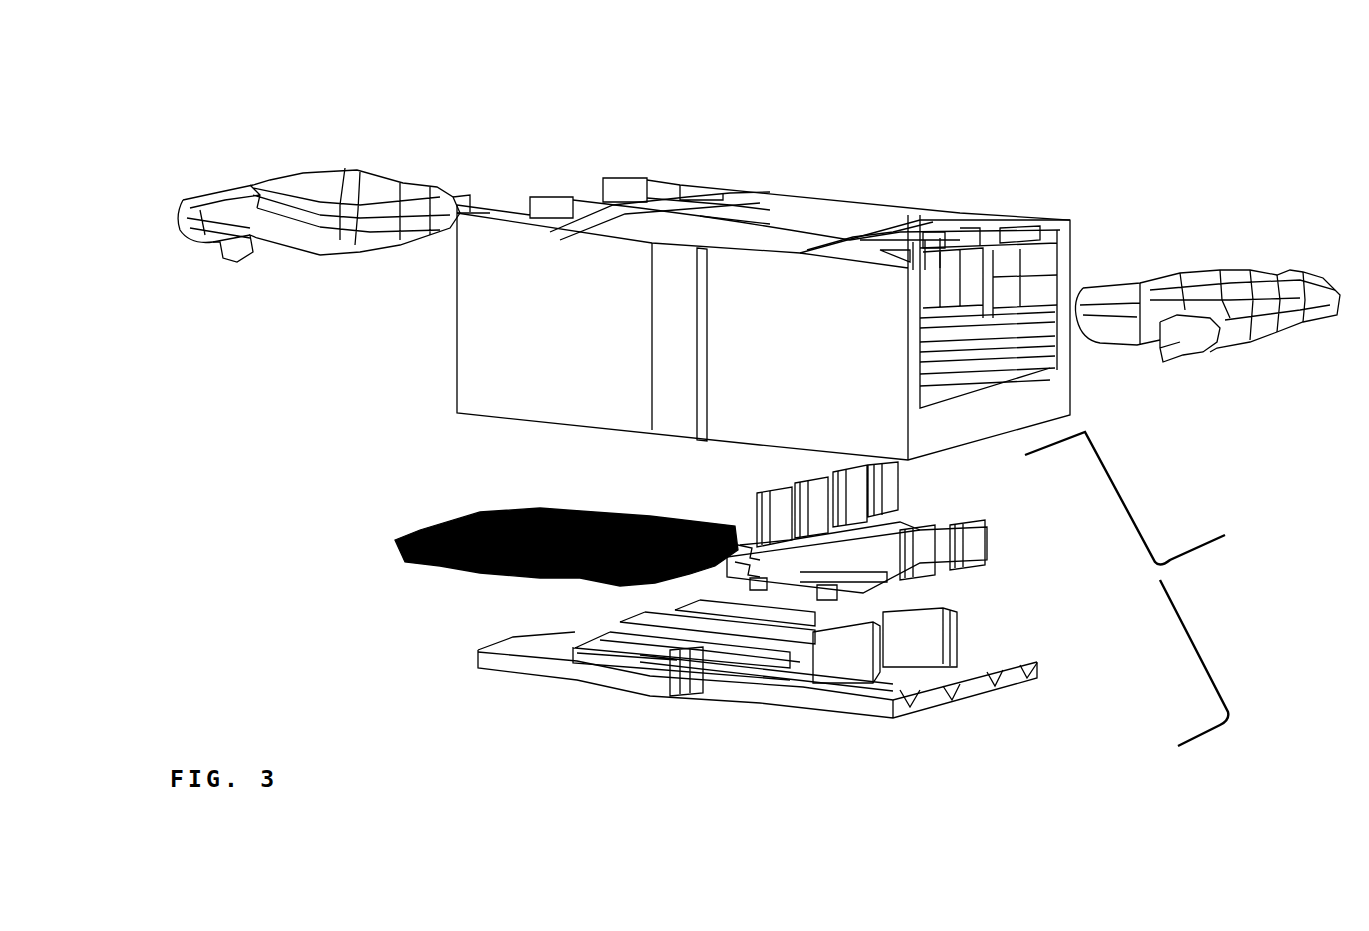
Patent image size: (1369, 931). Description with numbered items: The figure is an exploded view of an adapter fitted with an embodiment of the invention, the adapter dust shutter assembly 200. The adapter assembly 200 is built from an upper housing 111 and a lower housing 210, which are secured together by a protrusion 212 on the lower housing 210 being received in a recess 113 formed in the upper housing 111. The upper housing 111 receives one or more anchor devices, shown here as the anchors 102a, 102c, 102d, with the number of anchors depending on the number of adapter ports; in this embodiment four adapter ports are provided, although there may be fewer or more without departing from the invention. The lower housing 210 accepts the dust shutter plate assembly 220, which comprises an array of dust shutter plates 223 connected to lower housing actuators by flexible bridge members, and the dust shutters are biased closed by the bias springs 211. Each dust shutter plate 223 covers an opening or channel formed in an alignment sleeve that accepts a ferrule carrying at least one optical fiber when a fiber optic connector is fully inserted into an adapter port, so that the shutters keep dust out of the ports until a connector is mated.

The adapter dust shutter assembly 200 is at (178, 110).
The upper housing 111 is at (774, 203).
The recess 113 is at (683, 429).
The anchor 102a is at (1203, 268).
The anchor 102c is at (406, 192).
The anchor 102d is at (300, 252).
The bias springs 211 is at (410, 558).
The dust shutter plate 223 is at (920, 512).
The lower housing 210 is at (987, 709).
The protrusion 212 is at (682, 689).
The dust shutter plate assembly 220 is at (1231, 526).